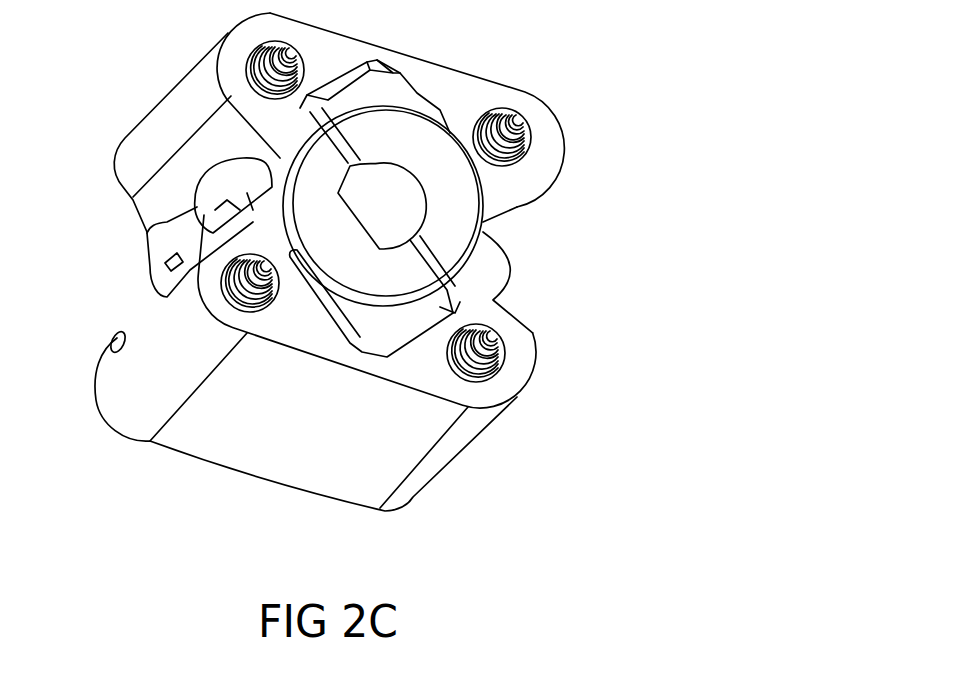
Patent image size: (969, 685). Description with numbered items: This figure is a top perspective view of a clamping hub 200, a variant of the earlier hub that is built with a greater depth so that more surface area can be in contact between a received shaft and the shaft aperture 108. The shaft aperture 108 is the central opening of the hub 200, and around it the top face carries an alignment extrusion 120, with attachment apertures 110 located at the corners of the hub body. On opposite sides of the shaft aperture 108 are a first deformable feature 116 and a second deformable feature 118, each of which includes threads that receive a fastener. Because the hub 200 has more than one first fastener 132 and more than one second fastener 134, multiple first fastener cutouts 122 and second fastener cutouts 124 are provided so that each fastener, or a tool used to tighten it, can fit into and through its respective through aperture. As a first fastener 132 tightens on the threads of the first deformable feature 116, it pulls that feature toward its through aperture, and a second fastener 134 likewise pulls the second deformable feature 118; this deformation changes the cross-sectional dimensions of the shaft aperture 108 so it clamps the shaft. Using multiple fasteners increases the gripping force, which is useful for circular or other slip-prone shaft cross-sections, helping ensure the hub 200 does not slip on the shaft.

The hub 200 is at (684, 112).
The shaft aperture 108 is at (395, 197).
The attachment apertures 110 is at (503, 160).
The first deformable feature 116 is at (372, 322).
The second deformable feature 118 is at (380, 90).
The alignment extrusion 120 is at (323, 188).
The first fastener cutout 122 is at (510, 222).
The second fastener cutout 124 is at (123, 332).
The first fastener 132 is at (503, 285).
The second fastener 134 is at (130, 197).